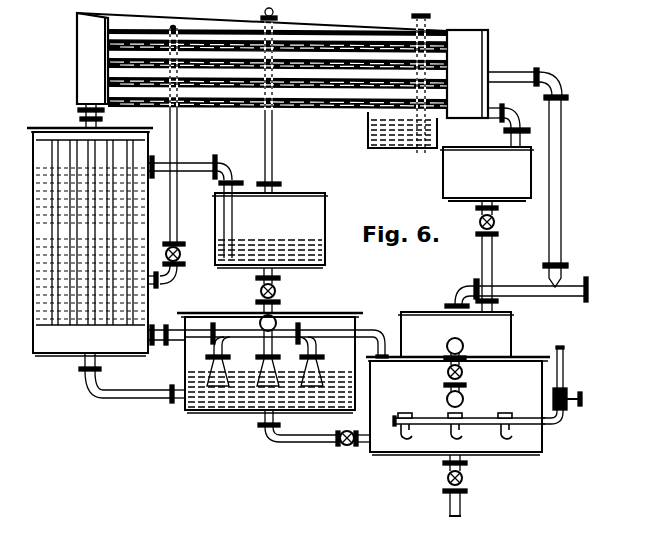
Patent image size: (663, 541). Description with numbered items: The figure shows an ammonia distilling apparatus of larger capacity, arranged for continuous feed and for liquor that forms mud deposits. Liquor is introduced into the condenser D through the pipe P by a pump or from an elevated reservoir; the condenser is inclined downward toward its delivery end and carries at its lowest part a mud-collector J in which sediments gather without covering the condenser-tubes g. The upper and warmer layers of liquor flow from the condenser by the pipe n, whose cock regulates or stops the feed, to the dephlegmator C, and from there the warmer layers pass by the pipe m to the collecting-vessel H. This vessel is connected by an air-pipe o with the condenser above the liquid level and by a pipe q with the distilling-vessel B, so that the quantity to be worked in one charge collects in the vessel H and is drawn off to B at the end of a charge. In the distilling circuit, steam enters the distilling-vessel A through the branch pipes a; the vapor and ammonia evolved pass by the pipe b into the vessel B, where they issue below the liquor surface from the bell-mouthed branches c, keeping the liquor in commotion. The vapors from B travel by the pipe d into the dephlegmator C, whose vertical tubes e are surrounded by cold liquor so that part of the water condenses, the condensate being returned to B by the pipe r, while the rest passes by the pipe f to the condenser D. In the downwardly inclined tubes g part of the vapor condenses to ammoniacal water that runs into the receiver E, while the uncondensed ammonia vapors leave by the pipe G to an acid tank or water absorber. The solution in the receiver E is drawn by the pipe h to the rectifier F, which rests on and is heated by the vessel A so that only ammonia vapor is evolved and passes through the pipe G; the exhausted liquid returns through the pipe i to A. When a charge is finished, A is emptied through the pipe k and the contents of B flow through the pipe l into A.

The distilling-vessel A is at (474, 400).
The second distilling-vessel B is at (270, 363).
The dephlegmator C is at (83, 242).
The condenser D is at (282, 62).
The receiver E is at (487, 152).
The rectifier F is at (456, 334).
The pipe G is at (516, 188).
The collecting-vessel H is at (270, 230).
The trough J is at (394, 130).
The pipe P is at (420, 88).
The branch pipes a is at (469, 428).
The pipe b is at (286, 339).
The bell-mouthed branches c is at (265, 350).
The pipe d is at (166, 328).
The vertical tubes e is at (91, 232).
The pipe f is at (92, 116).
The condenser-tubes g is at (277, 72).
The pipe h is at (489, 256).
The pipe i is at (456, 372).
The pipe k is at (457, 485).
The pipe l is at (314, 428).
The pipe m is at (195, 204).
The pipe n is at (167, 157).
The air-pipe o is at (272, 99).
The pipe q is at (272, 290).
The pipe r is at (132, 384).